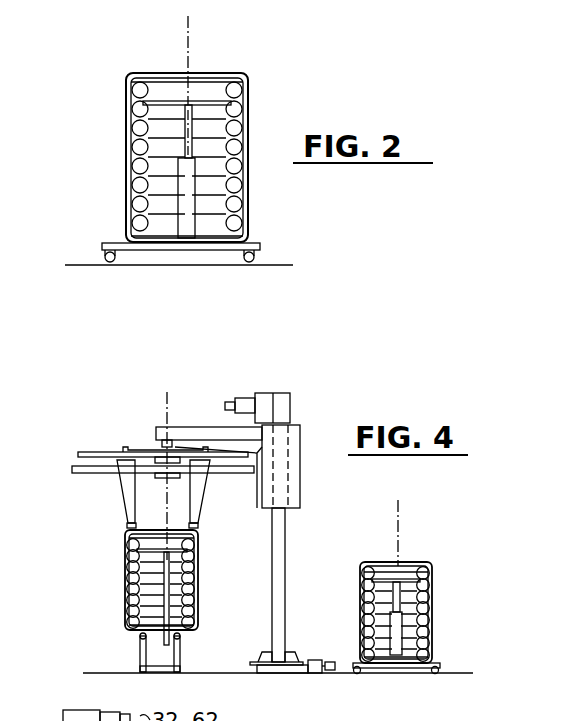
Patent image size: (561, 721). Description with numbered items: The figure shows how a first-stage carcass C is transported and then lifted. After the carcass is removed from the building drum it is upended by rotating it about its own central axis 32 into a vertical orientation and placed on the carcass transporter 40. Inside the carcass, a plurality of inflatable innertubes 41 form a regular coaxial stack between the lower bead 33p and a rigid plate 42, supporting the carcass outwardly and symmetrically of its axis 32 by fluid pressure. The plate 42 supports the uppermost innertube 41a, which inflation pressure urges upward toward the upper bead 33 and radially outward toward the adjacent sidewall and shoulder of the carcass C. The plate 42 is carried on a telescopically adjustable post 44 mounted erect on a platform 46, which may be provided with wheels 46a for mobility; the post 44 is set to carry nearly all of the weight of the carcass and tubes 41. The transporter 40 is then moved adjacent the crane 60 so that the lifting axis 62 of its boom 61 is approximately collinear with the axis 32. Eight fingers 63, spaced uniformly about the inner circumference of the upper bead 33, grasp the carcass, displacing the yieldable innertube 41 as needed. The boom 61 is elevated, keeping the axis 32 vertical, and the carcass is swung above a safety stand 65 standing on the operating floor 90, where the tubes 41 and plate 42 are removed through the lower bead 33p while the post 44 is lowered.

In FIG. 2, the central axis 32 is at (190, 33).
In FIG. 4, the central axis 32 is at (397, 512).
In FIG. 2, the upper bead 33 is at (138, 77).
In FIG. 4, the upper bead 33 is at (197, 540).
In FIG. 2, the lower bead 33p is at (245, 235).
In FIG. 4, the lower bead 33p is at (125, 626).
In FIG. 2, the carcass transporter 40 is at (213, 157).
In FIG. 4, the carcass transporter 40 is at (406, 556).
In FIG. 2, the innertubes 41 is at (130, 147).
In FIG. 4, the innertubes 41 is at (194, 607).
In FIG. 2, the uppermost innertube 41a is at (167, 88).
In FIG. 2, the rigid plate 42 is at (205, 100).
In FIG. 4, the rigid plate 42 is at (172, 552).
In FIG. 2, the post 44 is at (182, 208).
In FIG. 4, the post 44 is at (397, 644).
In FIG. 2, the platform 46 is at (210, 272).
In FIG. 4, the platform 46 is at (380, 685).
In FIG. 2, the wheels 46a is at (252, 264).
In FIG. 4, the wheels 46a is at (353, 672).
In FIG. 4, the crane 60 is at (188, 525).
In FIG. 4, the boom 61 is at (213, 436).
In FIG. 4, the lifting axis 62 is at (163, 500).
In FIG. 4, the fingers 63 is at (198, 526).
In FIG. 4, the safety stand 65 is at (140, 652).
In FIG. 4, the operating floor 90 is at (195, 672).
In FIG. 2, the first-stage carcass C is at (133, 150).
In FIG. 4, the first-stage carcass C is at (127, 585).